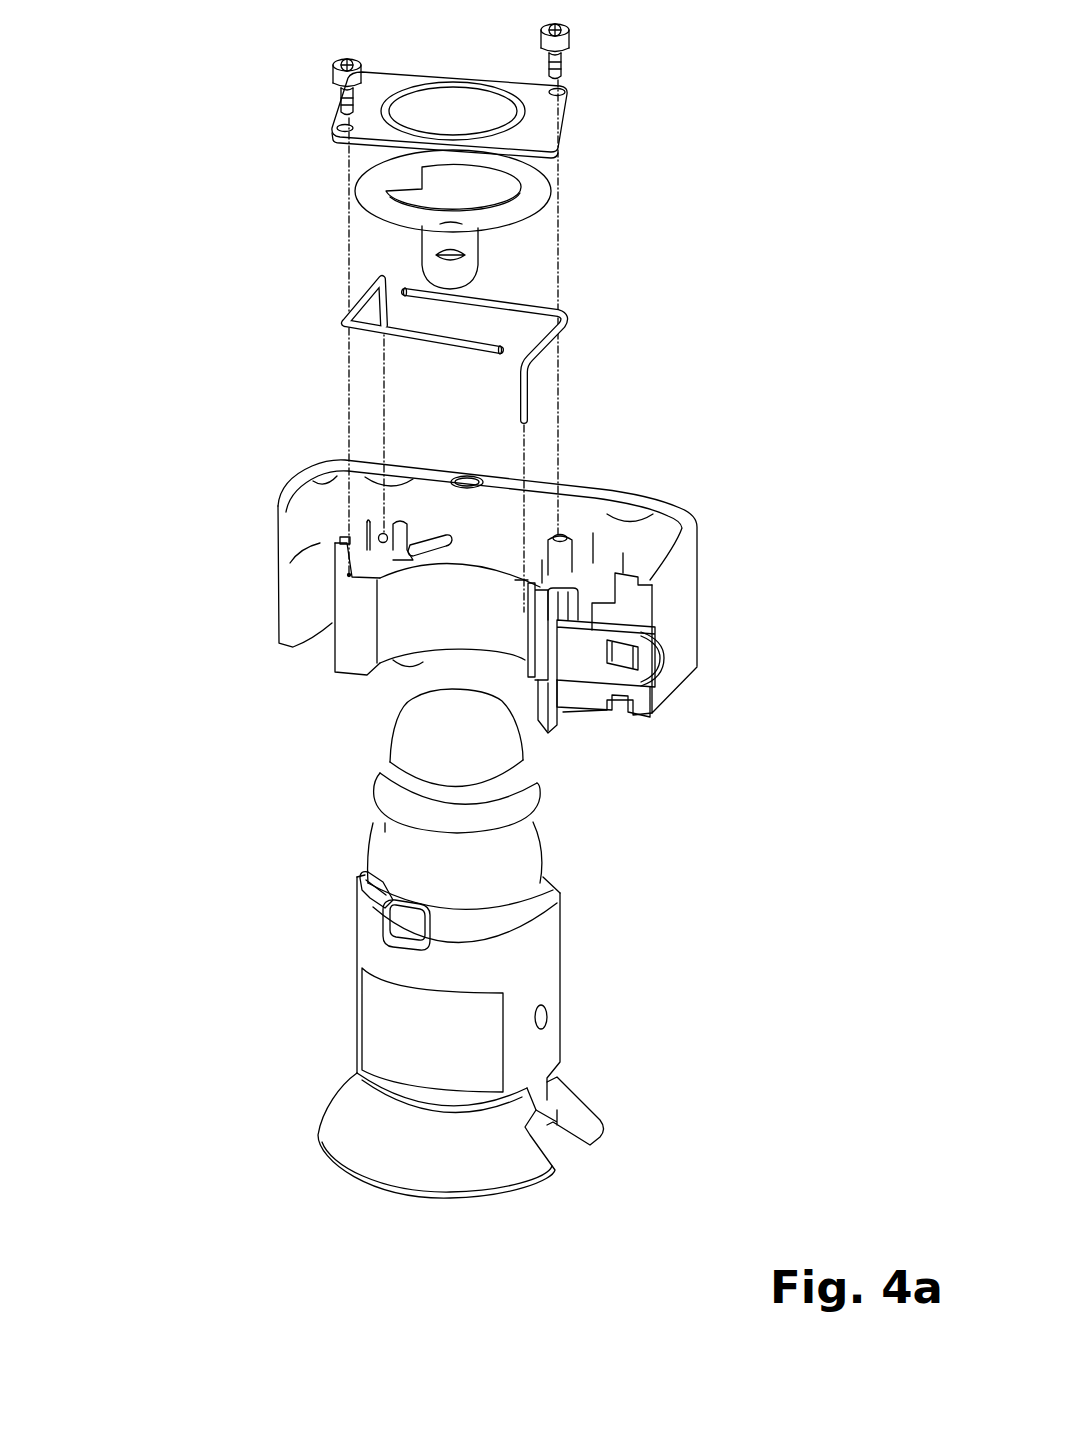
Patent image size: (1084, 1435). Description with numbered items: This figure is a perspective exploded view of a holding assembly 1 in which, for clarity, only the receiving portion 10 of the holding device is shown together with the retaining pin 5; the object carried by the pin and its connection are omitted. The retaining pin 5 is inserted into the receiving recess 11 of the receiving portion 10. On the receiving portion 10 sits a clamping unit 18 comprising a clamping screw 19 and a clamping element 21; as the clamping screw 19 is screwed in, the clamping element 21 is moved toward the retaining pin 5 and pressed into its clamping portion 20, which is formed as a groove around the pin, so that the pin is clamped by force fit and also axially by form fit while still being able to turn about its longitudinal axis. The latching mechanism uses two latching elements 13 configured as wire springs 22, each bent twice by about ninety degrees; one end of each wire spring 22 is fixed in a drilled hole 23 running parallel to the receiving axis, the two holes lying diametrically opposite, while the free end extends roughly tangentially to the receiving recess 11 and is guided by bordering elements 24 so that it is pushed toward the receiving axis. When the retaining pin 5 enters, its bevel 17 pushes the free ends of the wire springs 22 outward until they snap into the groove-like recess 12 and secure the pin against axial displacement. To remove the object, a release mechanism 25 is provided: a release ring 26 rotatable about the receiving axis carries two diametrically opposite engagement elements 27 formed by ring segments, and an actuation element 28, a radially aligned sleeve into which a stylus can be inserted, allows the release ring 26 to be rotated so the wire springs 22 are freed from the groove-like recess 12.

The holding assembly 1 is at (168, 206).
The retaining pin 5 is at (569, 973).
The receiving portion 10 is at (699, 500).
The receiving recess 11 is at (480, 638).
The groove-like recess 12 is at (390, 775).
The latching element 13 is at (580, 311).
The bevel 17 is at (420, 733).
The clamping unit 18 is at (622, 624).
The clamping screw 19 is at (587, 648).
The clamping portion 20 is at (525, 825).
The clamping element 21 is at (533, 648).
The wire spring 22 is at (350, 325).
The drilled hole 23 is at (358, 540).
The bordering element 24 is at (373, 542).
The release mechanism 25 is at (560, 180).
The release ring 26 is at (525, 206).
The engagement element 27 is at (400, 182).
The actuation element 28 is at (433, 237).